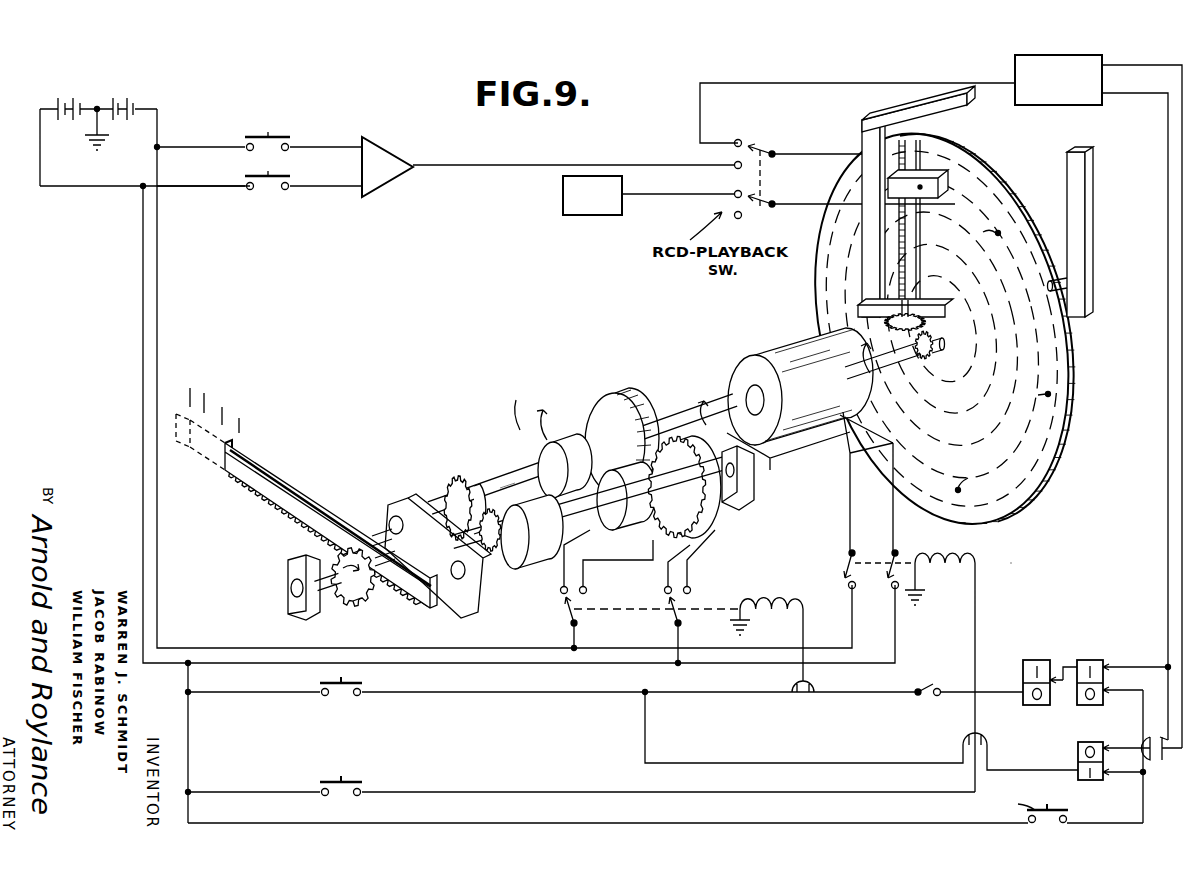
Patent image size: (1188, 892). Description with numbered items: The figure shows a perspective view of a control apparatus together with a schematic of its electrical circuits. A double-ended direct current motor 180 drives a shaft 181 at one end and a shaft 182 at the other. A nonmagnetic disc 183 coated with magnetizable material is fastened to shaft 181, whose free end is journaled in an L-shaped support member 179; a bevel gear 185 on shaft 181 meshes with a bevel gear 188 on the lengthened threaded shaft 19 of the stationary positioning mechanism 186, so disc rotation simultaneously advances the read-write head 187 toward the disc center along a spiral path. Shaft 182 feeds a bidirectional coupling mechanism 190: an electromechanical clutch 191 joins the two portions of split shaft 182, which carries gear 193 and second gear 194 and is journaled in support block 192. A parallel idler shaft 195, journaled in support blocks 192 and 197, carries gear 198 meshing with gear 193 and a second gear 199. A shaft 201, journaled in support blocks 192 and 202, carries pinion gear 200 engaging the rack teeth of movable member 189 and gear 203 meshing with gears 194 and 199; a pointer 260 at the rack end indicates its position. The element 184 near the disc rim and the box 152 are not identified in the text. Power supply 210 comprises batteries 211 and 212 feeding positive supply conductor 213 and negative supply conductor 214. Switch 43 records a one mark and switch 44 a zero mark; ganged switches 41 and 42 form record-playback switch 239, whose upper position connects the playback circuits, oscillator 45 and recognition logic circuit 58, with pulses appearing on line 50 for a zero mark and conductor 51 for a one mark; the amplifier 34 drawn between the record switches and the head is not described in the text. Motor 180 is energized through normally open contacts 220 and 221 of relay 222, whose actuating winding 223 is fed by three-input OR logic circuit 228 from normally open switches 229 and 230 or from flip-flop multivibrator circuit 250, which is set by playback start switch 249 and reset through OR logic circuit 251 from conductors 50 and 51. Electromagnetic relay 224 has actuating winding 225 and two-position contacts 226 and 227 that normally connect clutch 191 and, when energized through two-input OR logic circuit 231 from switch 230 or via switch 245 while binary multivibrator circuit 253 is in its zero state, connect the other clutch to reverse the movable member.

The power supply 210 is at (106, 95).
The battery 211 is at (74, 97).
The battery 212 is at (137, 100).
The positive supply conductor 213 is at (142, 292).
The negative supply conductor 214 is at (158, 294).
The switch 43 is at (284, 136).
The switch 44 is at (284, 177).
The amplifier 34 is at (385, 152).
The oscillator 45 is at (575, 215).
The switch 42 is at (770, 150).
The switch 41 is at (770, 204).
The record-playback switch 239 is at (750, 181).
The conductor 51 is at (1140, 62).
The line 50 is at (1135, 92).
The recognition logic circuit 58 is at (1072, 105).
The disc 183 is at (1072, 360).
The disc recording tracks 184 is at (1058, 474).
The stationary positioning mechanism 186 is at (862, 138).
The support member 179 is at (968, 112).
The threaded shaft 19 is at (905, 240).
The read-write head 187 is at (927, 174).
The bevel gear 188 is at (870, 328).
The bevel gear 185 is at (925, 322).
The shaft 181 is at (925, 352).
The double-ended direct current motor 180 is at (784, 348).
The shaft 182 is at (722, 394).
The gear 193 is at (627, 404).
The electromechanical clutch 191 is at (569, 448).
The second gear 194 is at (462, 480).
The gear 203 is at (511, 474).
The bidirectional coupling mechanism 190 is at (523, 430).
The gear 198 is at (712, 518).
The support block 197 is at (755, 483).
The parallel idler shaft 195 is at (500, 587).
The second gear 199 is at (272, 506).
The movable member 189 is at (266, 468).
The pointer 260 is at (240, 446).
The support block 192 is at (403, 501).
The pinion gear 200 is at (364, 603).
The shaft 201 is at (320, 567).
The support block 202 is at (298, 612).
The two-position contact 226 is at (587, 591).
The two-position contact 227 is at (672, 614).
The actuating winding 225 is at (768, 614).
The electromagnetic relay 224 is at (722, 596).
The normally open relay contact 220 is at (848, 571).
The normally open relay contact 221 is at (910, 562).
The actuating winding 223 is at (937, 573).
The relay 222 is at (998, 567).
The two-input OR logic circuit 231 is at (790, 680).
The normally open switch 230 is at (360, 684).
The normally open switch 229 is at (346, 780).
The switch 245 is at (921, 688).
The three-input OR logic circuit 228 is at (963, 733).
The binary multivibrator circuit 253 is at (1050, 661).
The flip-flop 152 is at (1090, 660).
The flip-flop multivibrator circuit 250 is at (1078, 748).
The OR logic circuit 251 is at (1162, 762).
The playback start switch 249 is at (1065, 810).